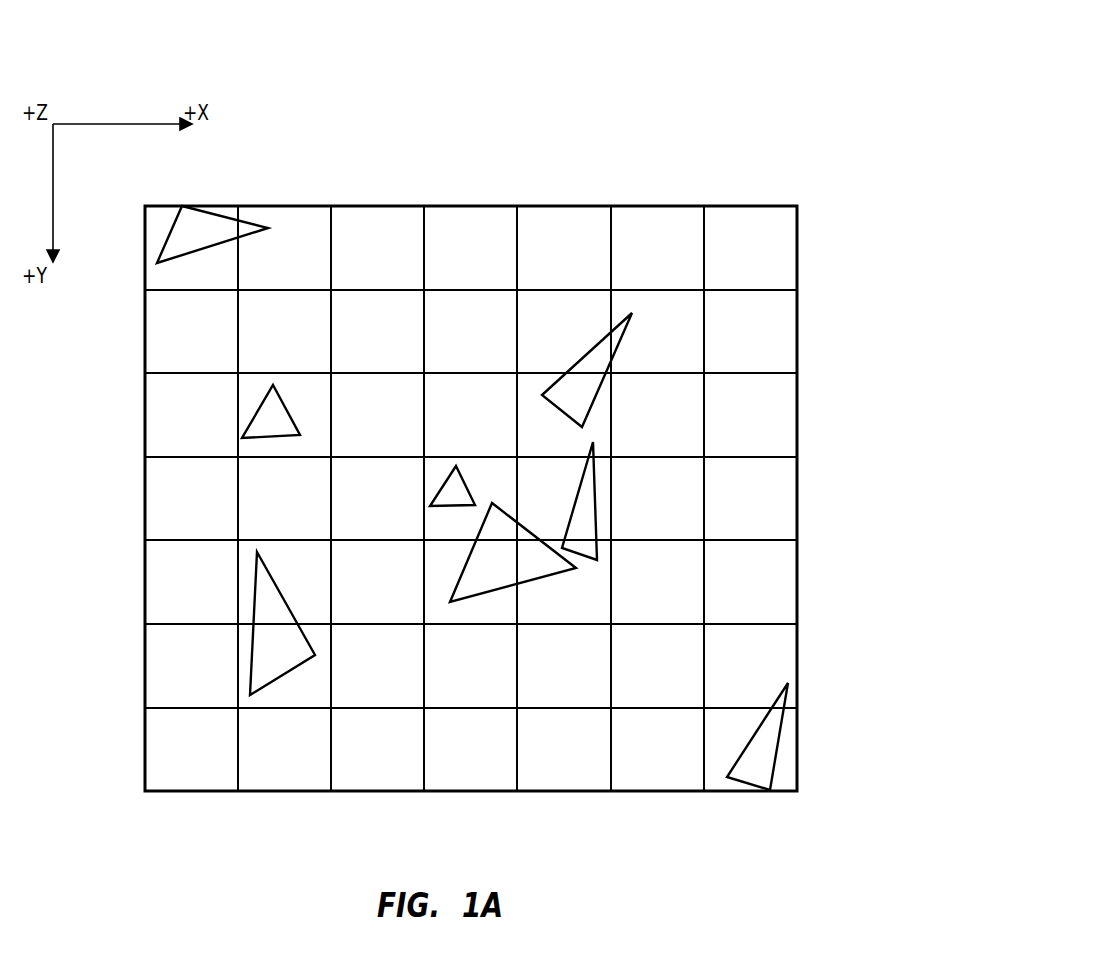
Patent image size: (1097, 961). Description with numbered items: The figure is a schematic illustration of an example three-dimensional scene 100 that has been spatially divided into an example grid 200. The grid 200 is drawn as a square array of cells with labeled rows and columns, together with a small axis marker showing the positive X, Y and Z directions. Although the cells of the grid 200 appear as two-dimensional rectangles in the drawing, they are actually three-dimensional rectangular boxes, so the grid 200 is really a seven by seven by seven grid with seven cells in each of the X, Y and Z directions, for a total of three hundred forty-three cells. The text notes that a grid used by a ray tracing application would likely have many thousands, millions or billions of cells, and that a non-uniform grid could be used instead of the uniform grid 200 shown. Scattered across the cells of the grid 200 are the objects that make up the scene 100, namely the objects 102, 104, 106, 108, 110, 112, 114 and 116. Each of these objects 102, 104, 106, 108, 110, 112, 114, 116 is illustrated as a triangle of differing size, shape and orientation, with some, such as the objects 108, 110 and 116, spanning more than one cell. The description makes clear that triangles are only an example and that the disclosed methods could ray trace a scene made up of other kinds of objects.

The three-dimensional scene 100 is at (645, 87).
The grid 200 is at (797, 250).
The object 102 is at (183, 257).
The object 104 is at (303, 399).
The object 106 is at (280, 590).
The object 108 is at (585, 355).
The object 110 is at (530, 583).
The object 112 is at (743, 747).
The object 114 is at (493, 483).
The object 116 is at (573, 505).